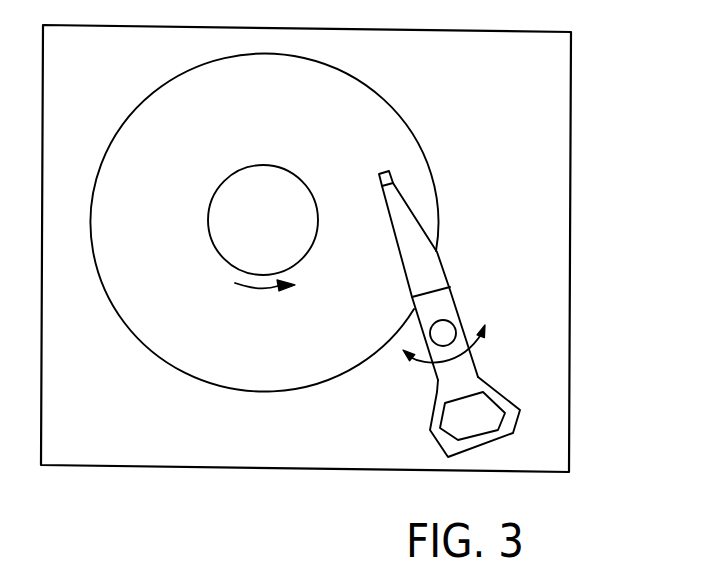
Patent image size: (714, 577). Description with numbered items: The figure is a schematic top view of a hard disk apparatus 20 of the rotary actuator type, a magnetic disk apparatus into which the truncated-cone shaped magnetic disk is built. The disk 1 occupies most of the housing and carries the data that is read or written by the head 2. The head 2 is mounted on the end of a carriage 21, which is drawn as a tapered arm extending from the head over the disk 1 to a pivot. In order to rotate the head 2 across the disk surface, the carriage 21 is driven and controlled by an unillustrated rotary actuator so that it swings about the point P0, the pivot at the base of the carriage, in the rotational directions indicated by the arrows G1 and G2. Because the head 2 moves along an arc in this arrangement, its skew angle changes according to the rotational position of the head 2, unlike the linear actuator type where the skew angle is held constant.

The disk 1 is at (407, 118).
The head 2 is at (390, 170).
The hard disk apparatus 20 is at (575, 75).
The carriage 21 is at (447, 305).
The point P0 is at (446, 332).
The arrow G1 is at (437, 362).
The arrow G2 is at (494, 346).